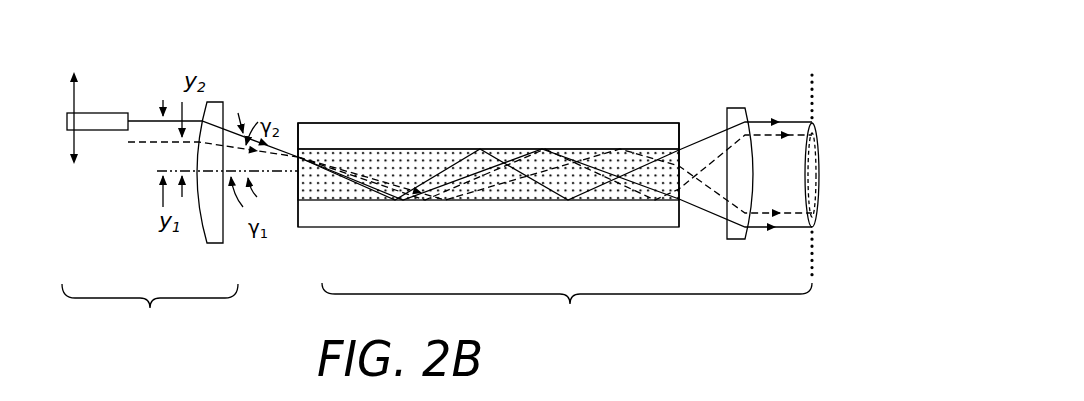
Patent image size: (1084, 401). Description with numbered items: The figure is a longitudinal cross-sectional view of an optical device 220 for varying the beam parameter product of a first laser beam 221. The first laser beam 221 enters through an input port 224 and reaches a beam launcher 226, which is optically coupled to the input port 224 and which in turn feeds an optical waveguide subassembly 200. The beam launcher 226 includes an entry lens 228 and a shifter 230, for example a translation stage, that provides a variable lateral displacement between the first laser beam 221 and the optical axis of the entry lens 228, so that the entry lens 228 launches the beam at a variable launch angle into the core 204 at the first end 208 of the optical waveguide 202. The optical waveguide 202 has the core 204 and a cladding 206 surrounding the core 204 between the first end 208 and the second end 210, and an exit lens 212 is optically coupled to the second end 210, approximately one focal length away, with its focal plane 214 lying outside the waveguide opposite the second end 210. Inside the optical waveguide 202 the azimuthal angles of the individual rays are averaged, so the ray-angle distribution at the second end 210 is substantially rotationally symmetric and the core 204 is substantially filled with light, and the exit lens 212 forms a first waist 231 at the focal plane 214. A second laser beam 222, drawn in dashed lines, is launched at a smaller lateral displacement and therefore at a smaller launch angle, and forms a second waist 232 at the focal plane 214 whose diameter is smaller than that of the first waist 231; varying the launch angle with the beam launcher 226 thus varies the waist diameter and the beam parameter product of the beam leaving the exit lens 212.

The optical waveguide subassembly 200 is at (567, 310).
The optical waveguide 202 is at (363, 82).
The core 204 is at (436, 158).
The cladding 206 is at (562, 137).
The first end 208 is at (297, 183).
The second end 210 is at (680, 185).
The exit lens 212 is at (735, 241).
The focal plane 214 is at (815, 258).
The optical device 220 is at (694, 26).
The first laser beam 221 is at (158, 118).
The second laser beam 222 is at (129, 143).
The input port 224 is at (103, 131).
The beam launcher 226 is at (150, 311).
The entry lens 228 is at (210, 243).
The shifter 230 is at (76, 110).
The first waist 231 is at (812, 124).
The second waist 232 is at (818, 160).